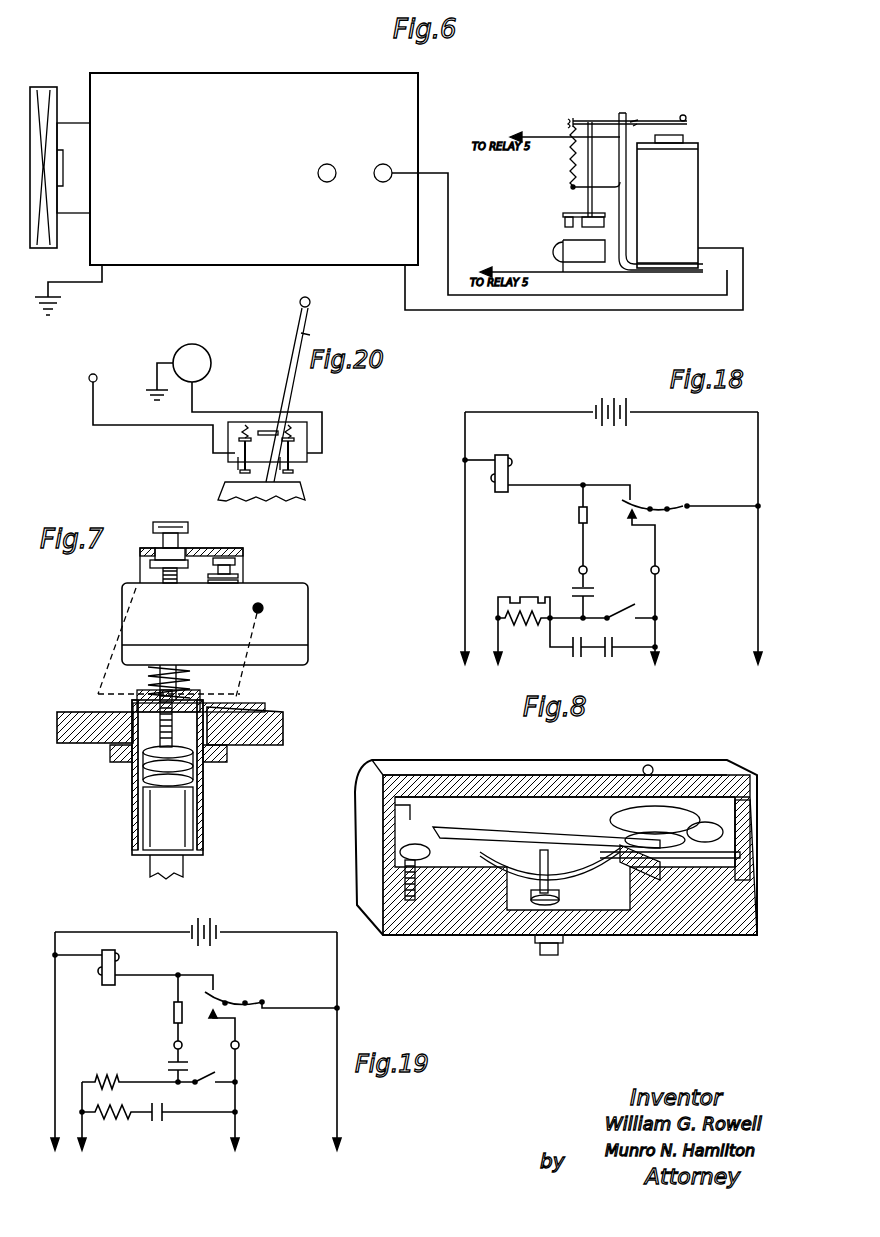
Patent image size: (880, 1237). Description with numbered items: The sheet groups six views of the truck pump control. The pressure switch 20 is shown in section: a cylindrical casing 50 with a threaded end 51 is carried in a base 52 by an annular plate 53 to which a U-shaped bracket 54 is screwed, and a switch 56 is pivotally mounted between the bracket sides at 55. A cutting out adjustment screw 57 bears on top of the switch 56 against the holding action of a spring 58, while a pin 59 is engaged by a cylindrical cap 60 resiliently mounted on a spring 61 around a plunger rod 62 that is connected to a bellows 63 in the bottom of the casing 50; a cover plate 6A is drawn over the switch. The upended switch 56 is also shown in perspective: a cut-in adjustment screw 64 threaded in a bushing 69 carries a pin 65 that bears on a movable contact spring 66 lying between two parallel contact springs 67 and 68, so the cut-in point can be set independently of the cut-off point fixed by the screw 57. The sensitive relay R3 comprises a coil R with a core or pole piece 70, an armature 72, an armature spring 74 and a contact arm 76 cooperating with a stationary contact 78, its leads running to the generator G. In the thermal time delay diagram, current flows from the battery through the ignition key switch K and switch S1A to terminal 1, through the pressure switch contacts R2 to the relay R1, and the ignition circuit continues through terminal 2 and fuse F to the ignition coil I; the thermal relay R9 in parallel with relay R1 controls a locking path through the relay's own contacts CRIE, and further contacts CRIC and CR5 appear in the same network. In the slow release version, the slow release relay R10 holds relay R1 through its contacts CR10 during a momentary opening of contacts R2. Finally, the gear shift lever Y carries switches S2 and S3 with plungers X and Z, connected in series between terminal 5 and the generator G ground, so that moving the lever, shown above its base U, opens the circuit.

In FIG. 6, the generator G is at (212, 79).
In FIG. 20, the generator G is at (192, 344).
In FIG. 6, the relay coil R is at (690, 195).
In FIG. 6, the relay R3 is at (678, 106).
In FIG. 6, the core or pole piece 70 is at (688, 138).
In FIG. 6, the armature 72 is at (588, 125).
In FIG. 6, the armature spring 74 is at (571, 168).
In FIG. 6, the contact arm 76 is at (588, 198).
In FIG. 6, the stationary contact 78 is at (563, 222).
In FIG. 20, the terminal 5 is at (162, 406).
In FIG. 20, the gear shift lever Y is at (290, 344).
In FIG. 20, the base U is at (304, 498).
In FIG. 20, the switch S2 is at (238, 458).
In FIG. 20, the switch S3 is at (305, 456).
In FIG. 20, the plunger Z is at (292, 468).
In FIG. 20, the plunger X is at (242, 472).
In FIG. 7, the switch 56 is at (308, 604).
In FIG. 8, the switch 56 is at (380, 830).
In FIG. 7, the pressure switch 20 is at (318, 630).
In FIG. 7, the cover plate 6A is at (245, 556).
In FIG. 7, the cutting out adjustment screw 57 is at (172, 520).
In FIG. 7, the bushing 69 is at (240, 580).
In FIG. 8, the bushing 69 is at (565, 940).
In FIG. 7, the pivot 55 is at (263, 606).
In FIG. 7, the U-shaped bracket 54 is at (258, 684).
In FIG. 7, the pin 59 is at (168, 668).
In FIG. 8, the pin 59 is at (652, 766).
In FIG. 7, the spring 58 is at (148, 672).
In FIG. 7, the cylindrical cap 60 is at (137, 690).
In FIG. 7, the spring 61 is at (186, 692).
In FIG. 7, the annular plate 53 is at (260, 710).
In FIG. 7, the base 52 is at (283, 725).
In FIG. 7, the plunger rod 62 is at (115, 750).
In FIG. 7, the cylindrical casing 50 is at (195, 822).
In FIG. 7, the bellows 63 is at (143, 779).
In FIG. 7, the threaded end 51 is at (183, 870).
In FIG. 8, the movable contact spring 66 is at (517, 833).
In FIG. 8, the contact spring 67 is at (582, 850).
In FIG. 8, the contact spring 68 is at (654, 862).
In FIG. 8, the pin 65 is at (536, 877).
In FIG. 8, the cut-in adjustment screw 64 is at (537, 945).
In FIG. 18, the truck engine ignition coil I is at (505, 456).
In FIG. 19, the truck engine ignition coil I is at (117, 960).
In FIG. 18, the switch S1A is at (634, 494).
In FIG. 19, the switch S1A is at (222, 993).
In FIG. 18, the truck ignition key switch K is at (690, 503).
In FIG. 19, the truck ignition key switch K is at (270, 1000).
In FIG. 18, the fuse F is at (578, 512).
In FIG. 19, the fuse F is at (173, 1008).
In FIG. 18, the terminal 2 is at (592, 564).
In FIG. 19, the terminal 2 is at (183, 1045).
In FIG. 18, the terminal 1 is at (660, 570).
In FIG. 19, the terminal 1 is at (240, 1045).
In FIG. 18, the relay contact CRIC is at (596, 597).
In FIG. 19, the relay contact CRIC is at (166, 1058).
In FIG. 18, the relay R1 is at (551, 629).
In FIG. 19, the relay R1 is at (108, 1118).
In FIG. 18, the thermal relay R9 is at (509, 596).
In FIG. 18, the pressure switch contacts R2 is at (645, 613).
In FIG. 19, the pressure switch contacts R2 is at (213, 1074).
In FIG. 18, the relay contacts CRIE is at (572, 654).
In FIG. 18, the relay contact CR5 is at (608, 657).
In FIG. 19, the slow release relay R10 is at (105, 1078).
In FIG. 19, the relay contacts CR10 is at (162, 1122).